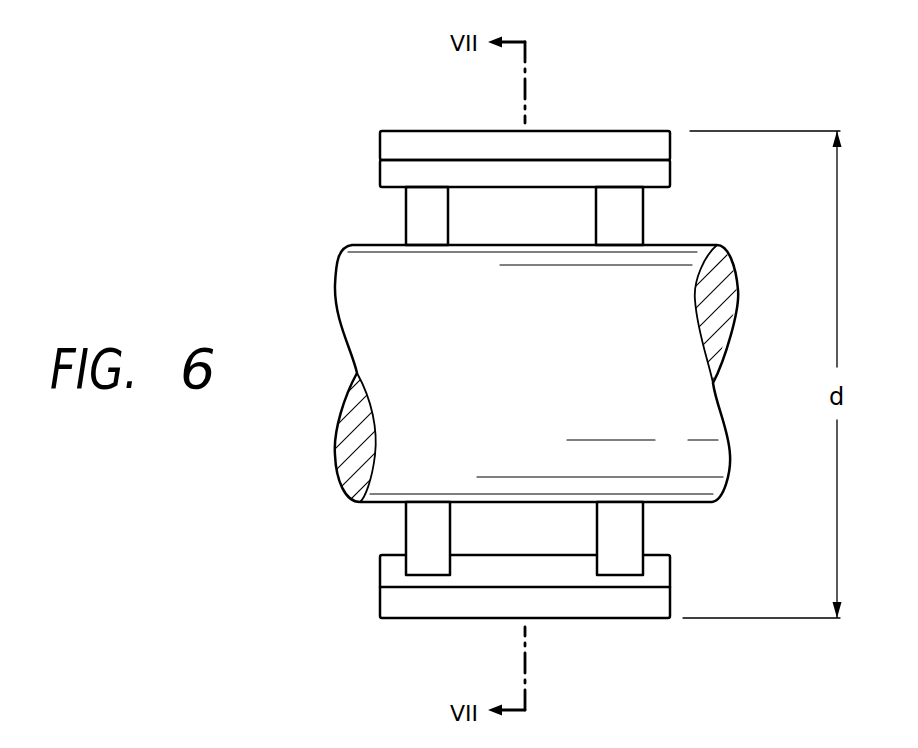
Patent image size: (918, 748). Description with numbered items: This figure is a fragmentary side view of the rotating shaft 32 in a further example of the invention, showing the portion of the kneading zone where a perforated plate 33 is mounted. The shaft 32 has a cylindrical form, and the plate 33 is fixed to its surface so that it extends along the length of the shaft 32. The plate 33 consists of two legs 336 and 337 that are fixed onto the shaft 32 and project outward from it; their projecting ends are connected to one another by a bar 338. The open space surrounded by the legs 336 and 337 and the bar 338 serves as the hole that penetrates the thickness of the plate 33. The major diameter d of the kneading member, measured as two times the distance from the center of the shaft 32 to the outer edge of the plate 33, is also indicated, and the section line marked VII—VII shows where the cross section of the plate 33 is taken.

The shaft 32 is at (703, 412).
The perforated plate 33 is at (539, 122).
The leg 336 is at (435, 220).
The leg 337 is at (613, 200).
The bar 338 is at (560, 140).